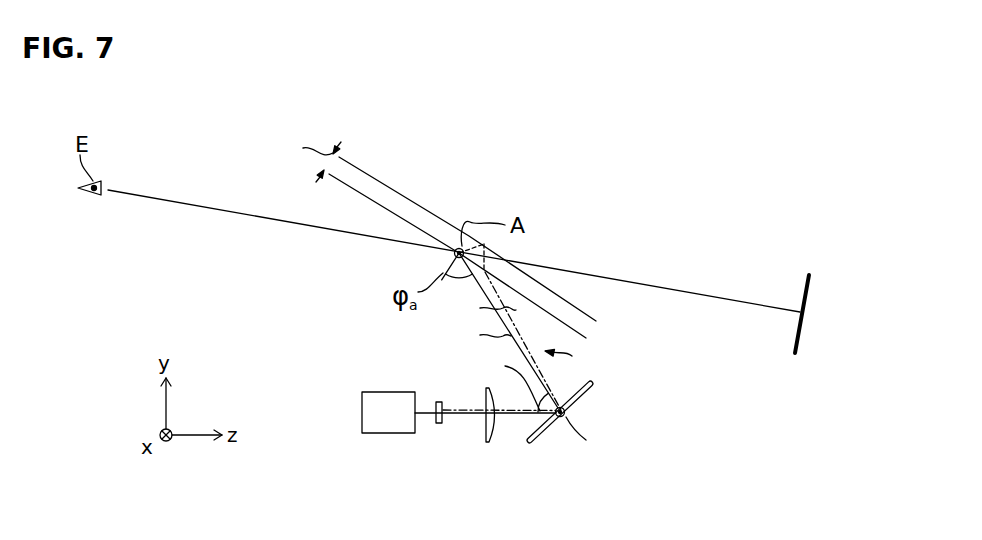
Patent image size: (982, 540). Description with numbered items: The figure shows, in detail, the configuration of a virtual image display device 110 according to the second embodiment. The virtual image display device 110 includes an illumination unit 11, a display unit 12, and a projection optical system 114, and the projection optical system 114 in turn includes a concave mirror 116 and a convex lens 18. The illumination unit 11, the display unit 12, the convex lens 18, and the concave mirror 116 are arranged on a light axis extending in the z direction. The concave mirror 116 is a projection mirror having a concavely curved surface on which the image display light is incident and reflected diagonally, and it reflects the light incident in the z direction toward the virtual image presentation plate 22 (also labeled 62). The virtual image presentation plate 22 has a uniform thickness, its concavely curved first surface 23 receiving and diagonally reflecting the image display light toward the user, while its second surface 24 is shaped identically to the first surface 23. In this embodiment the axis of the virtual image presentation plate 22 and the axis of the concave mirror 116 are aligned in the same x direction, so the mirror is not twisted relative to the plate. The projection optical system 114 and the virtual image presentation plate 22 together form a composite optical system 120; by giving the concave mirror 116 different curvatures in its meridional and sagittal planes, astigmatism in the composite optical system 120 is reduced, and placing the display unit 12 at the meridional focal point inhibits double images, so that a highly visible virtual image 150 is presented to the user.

The virtual image presentation plate 22 is at (363, 147).
The combiner (half mirror plate) 62 is at (449, 247).
The second surface 24 is at (383, 186).
The first surface 23 is at (372, 204).
The virtual image 150 is at (812, 252).
The virtual image display device 110 is at (342, 393).
The projection optical system 114 is at (416, 364).
The illumination unit 11 is at (387, 434).
The display unit 12 is at (440, 424).
The convex lens 18 is at (490, 443).
The composite optical system 120 is at (612, 302).
The concave mirror 116 is at (553, 422).